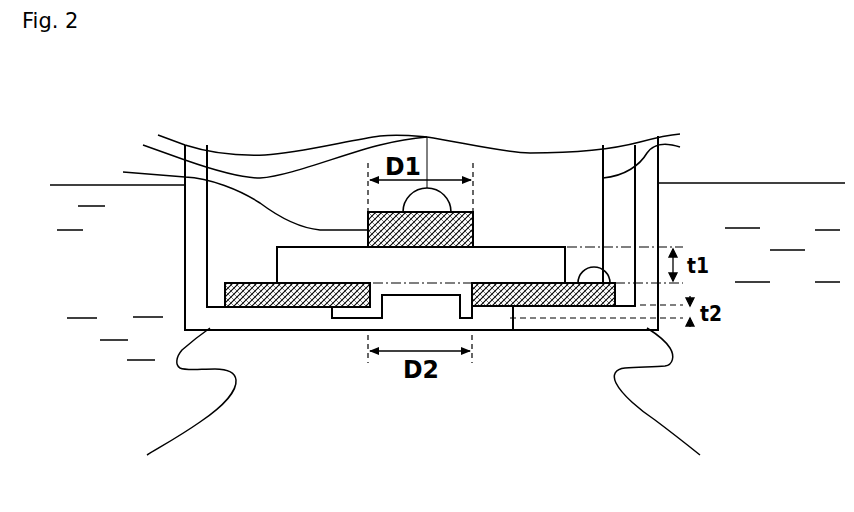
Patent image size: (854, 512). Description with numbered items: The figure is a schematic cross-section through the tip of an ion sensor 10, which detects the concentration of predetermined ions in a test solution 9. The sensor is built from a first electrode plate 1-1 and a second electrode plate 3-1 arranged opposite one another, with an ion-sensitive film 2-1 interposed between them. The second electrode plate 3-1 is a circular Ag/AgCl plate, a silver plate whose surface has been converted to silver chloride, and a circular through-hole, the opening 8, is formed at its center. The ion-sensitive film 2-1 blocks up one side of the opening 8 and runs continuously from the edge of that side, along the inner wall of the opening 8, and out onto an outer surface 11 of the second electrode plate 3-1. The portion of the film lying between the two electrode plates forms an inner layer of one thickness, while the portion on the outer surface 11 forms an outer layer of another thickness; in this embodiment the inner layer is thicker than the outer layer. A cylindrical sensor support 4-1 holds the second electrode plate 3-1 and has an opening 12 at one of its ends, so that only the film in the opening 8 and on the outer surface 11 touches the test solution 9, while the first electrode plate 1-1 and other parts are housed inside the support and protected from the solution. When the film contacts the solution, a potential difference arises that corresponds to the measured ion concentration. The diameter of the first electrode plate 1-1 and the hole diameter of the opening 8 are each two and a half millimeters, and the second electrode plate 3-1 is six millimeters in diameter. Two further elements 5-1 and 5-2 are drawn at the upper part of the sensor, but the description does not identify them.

The ion sensor 10 is at (712, 171).
The test solution 9 is at (773, 192).
The first lens portion 5-1 is at (391, 151).
The second lens portion 5-2 is at (662, 155).
The first electrode plate 1-1 is at (225, 194).
The ion-sensitive film 2-1 is at (307, 266).
The opening 8 is at (472, 297).
The sensor support 4-1 is at (650, 230).
The outer surface 11 is at (340, 328).
The opening 12 is at (502, 330).
The second electrode plate 3-1 is at (424, 404).